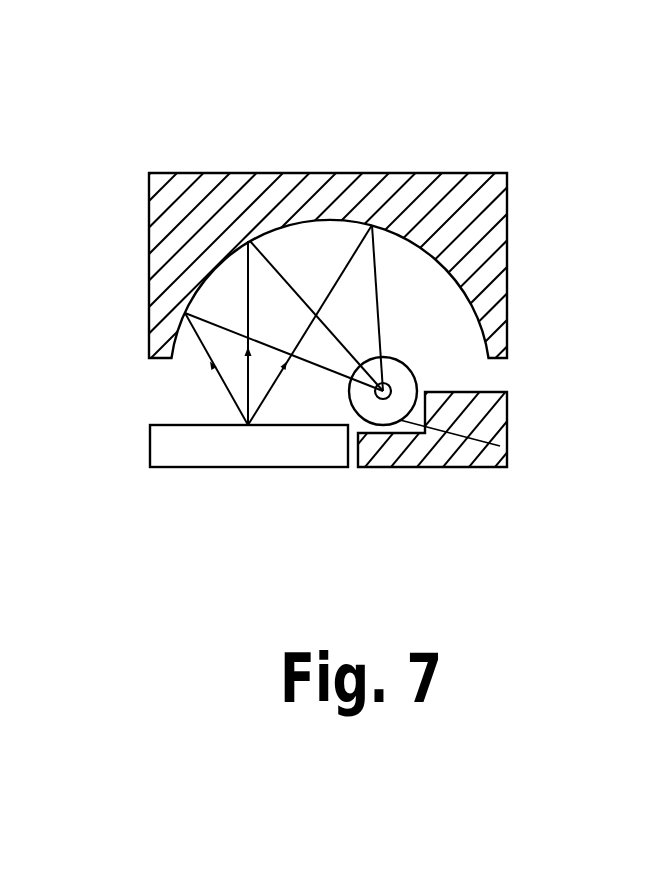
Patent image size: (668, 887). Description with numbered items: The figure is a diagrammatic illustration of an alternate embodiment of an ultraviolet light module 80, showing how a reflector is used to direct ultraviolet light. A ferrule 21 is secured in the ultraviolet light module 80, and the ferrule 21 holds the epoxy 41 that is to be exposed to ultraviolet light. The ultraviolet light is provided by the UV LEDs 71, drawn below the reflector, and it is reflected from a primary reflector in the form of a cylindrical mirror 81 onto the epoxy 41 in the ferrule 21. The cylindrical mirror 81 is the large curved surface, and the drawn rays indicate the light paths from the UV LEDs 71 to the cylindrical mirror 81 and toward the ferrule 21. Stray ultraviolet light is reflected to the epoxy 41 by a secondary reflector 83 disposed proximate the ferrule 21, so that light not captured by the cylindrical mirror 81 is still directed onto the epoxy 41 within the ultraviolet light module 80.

The cylindrical mirror 81 is at (313, 222).
The ferrule 21 is at (411, 371).
The secondary reflector 83 is at (500, 446).
The epoxy 41 is at (383, 393).
The UV LEDs 71 is at (177, 453).
The ultraviolet light module 80 is at (309, 517).